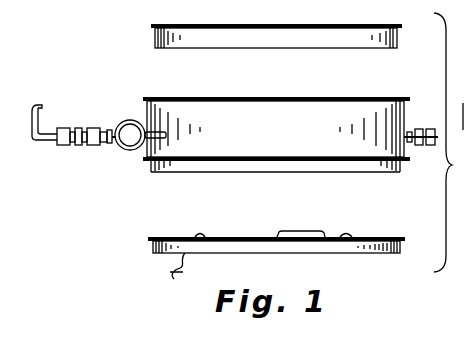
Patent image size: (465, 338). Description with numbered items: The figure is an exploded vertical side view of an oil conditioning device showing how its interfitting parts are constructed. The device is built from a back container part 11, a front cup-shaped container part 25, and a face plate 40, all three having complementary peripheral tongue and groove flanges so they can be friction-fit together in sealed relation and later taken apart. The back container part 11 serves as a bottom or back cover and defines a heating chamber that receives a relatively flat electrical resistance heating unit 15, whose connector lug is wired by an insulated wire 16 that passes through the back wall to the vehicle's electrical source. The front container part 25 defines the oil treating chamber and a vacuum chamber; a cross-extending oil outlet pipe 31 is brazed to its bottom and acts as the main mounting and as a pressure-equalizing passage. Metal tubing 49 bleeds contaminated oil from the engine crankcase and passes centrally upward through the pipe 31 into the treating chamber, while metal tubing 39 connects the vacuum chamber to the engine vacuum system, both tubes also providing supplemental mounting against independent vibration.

The face plate 40 is at (155, 35).
The container part 25 is at (289, 97).
The oil outlet pipe 31 is at (133, 121).
The metal tubing 49 is at (40, 110).
The container part 11 is at (255, 233).
The heating unit 15 is at (318, 231).
The insulated wire 16 is at (191, 266).
The metal tubing 39 is at (438, 142).